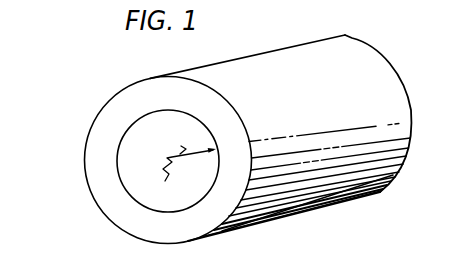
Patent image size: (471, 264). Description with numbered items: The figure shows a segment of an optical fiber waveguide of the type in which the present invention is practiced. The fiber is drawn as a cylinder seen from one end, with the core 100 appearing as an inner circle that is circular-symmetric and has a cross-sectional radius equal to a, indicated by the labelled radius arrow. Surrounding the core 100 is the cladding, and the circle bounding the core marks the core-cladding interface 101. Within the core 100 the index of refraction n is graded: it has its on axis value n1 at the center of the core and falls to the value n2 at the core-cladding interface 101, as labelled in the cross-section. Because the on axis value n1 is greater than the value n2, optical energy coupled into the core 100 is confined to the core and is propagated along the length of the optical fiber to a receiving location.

The core 100 is at (142, 122).
The core-cladding interface 101 is at (132, 197).
The index of refraction n is at (134, 149).
The on axis value of index of refraction n1 is at (188, 161).
The value of index of refraction at core-cladding interface n2 is at (95, 170).